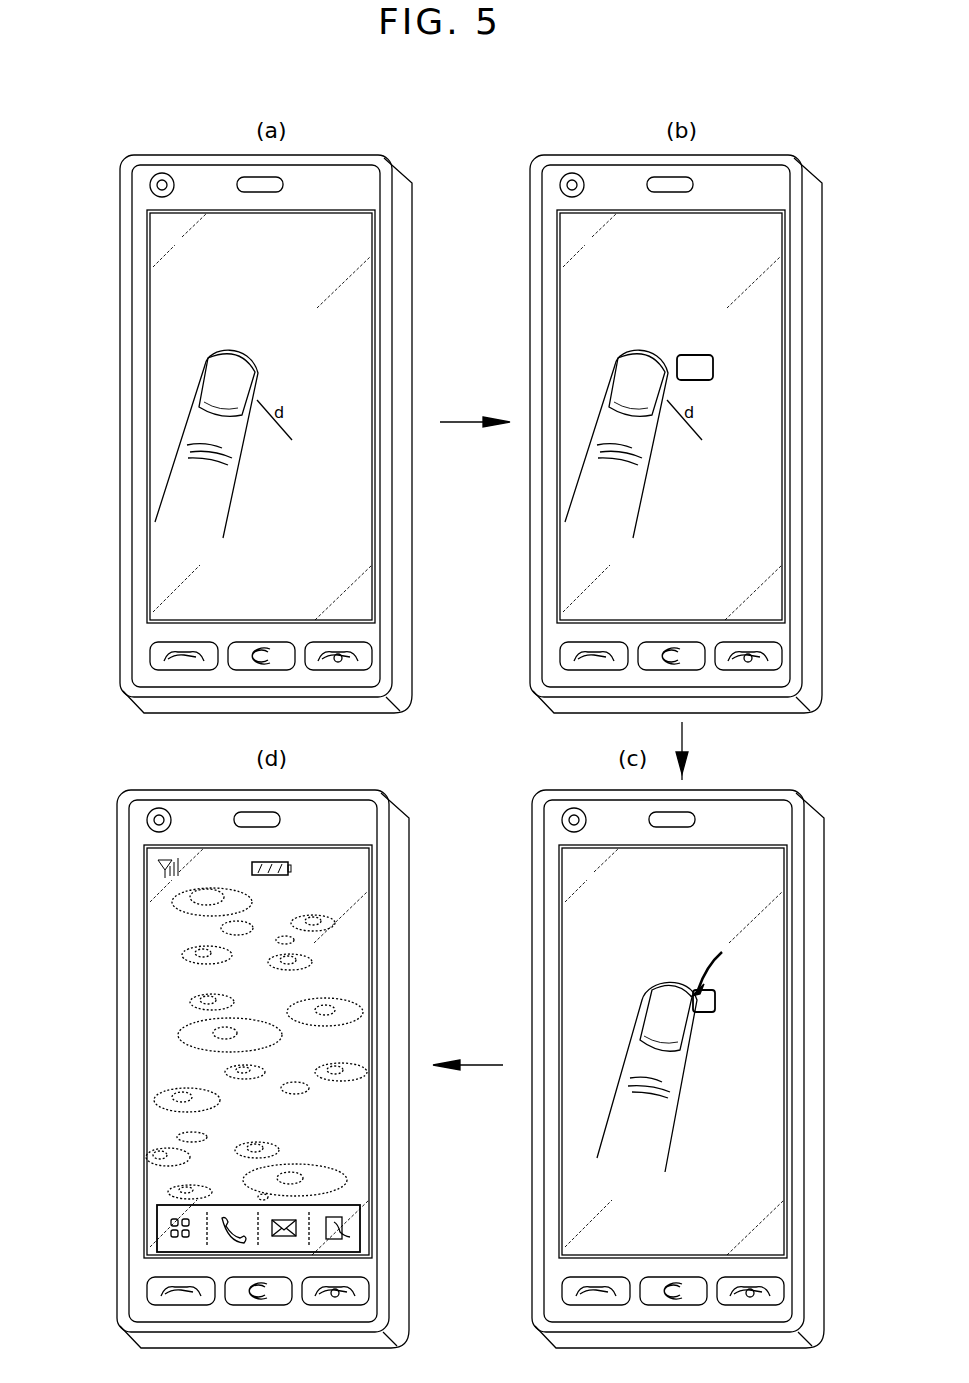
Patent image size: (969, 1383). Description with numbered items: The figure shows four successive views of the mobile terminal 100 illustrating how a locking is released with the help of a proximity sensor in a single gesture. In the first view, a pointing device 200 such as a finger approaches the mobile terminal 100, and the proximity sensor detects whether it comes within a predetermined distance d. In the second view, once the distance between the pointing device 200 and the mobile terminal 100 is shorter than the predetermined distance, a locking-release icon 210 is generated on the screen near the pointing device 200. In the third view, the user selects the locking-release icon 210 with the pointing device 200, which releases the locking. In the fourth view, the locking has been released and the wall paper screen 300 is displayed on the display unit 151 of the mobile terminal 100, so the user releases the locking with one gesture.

The mobile terminal 100 is at (346, 156).
The display unit 151 is at (162, 326).
The pointing device 200 is at (176, 448).
The locking-release icon 210 is at (692, 354).
The wall paper screen 300 is at (173, 1027).